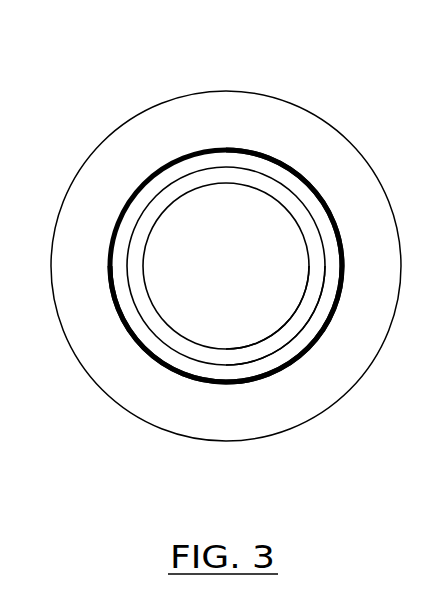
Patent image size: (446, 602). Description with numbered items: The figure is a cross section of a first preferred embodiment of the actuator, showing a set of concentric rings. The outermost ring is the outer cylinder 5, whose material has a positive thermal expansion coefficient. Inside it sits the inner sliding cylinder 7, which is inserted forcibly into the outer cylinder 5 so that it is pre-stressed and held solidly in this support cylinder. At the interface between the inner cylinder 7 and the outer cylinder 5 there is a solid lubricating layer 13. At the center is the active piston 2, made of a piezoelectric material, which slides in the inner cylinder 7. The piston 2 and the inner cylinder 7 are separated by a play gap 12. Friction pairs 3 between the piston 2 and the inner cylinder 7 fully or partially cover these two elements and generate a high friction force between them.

The active piston 2 is at (168, 293).
The friction pairs 3 is at (305, 212).
The outer cylinder 5 is at (161, 141).
The inner sliding cylinder 7 is at (120, 222).
The play gap 12 is at (300, 318).
The solid lubricating layer 13 is at (177, 380).